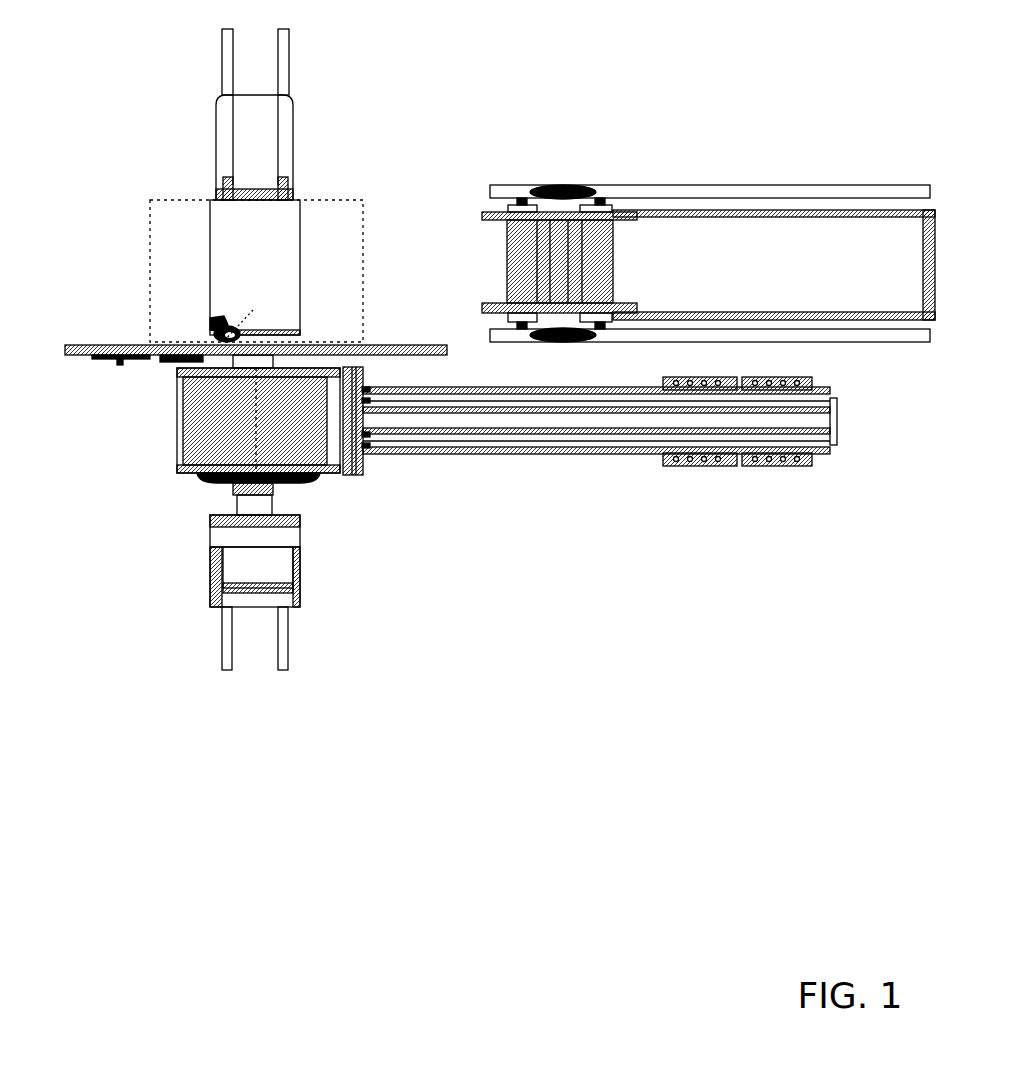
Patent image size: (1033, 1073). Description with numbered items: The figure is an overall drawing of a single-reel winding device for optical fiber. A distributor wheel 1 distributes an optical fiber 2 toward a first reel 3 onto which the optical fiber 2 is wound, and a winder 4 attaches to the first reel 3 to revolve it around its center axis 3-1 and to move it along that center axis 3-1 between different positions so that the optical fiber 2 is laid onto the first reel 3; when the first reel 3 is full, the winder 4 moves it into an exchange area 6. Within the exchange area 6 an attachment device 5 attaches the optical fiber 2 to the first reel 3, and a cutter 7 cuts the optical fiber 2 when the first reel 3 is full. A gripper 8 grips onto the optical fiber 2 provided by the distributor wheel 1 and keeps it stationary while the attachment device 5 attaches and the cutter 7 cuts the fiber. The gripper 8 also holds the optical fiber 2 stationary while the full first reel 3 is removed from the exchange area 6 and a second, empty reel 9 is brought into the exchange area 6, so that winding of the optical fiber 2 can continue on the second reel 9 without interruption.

The distributor wheel 1 is at (168, 367).
The optical fiber 2 is at (247, 312).
The first reel 3 is at (182, 442).
The center axis 3-1 is at (265, 445).
The winder 4 is at (228, 237).
The attachment device 5 is at (210, 317).
The exchange area 6 is at (148, 207).
The cutter 7 is at (225, 337).
The gripper 8 is at (225, 337).
The second reel 9 is at (505, 245).